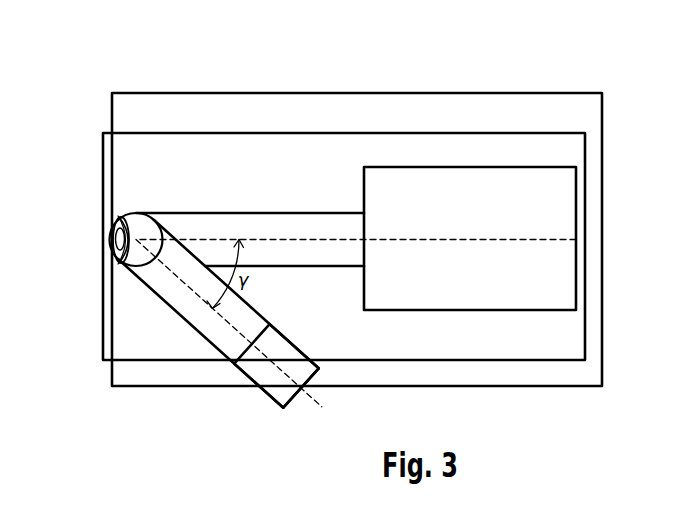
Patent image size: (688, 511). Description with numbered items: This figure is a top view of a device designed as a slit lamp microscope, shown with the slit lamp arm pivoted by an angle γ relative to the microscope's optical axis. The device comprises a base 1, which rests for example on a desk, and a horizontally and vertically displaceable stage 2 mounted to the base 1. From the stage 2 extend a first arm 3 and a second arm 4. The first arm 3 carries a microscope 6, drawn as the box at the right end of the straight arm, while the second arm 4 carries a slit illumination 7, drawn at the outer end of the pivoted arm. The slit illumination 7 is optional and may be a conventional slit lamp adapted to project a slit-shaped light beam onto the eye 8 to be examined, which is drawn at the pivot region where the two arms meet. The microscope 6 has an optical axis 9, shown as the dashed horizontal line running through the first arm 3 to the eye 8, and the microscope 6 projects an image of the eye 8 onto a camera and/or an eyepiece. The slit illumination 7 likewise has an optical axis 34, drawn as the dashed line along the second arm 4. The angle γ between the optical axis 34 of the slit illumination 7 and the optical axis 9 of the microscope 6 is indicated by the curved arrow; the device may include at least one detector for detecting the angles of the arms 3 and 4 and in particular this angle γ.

The base 1 is at (357, 209).
The stage 2 is at (344, 191).
The first arm 3 is at (237, 161).
The second arm 4 is at (209, 338).
The microscope 6 is at (470, 170).
The slit illumination 7 is at (258, 390).
The eye 8 is at (94, 237).
The optical axis 9 is at (358, 340).
The optical axis of the slit illumination 34 is at (182, 323).